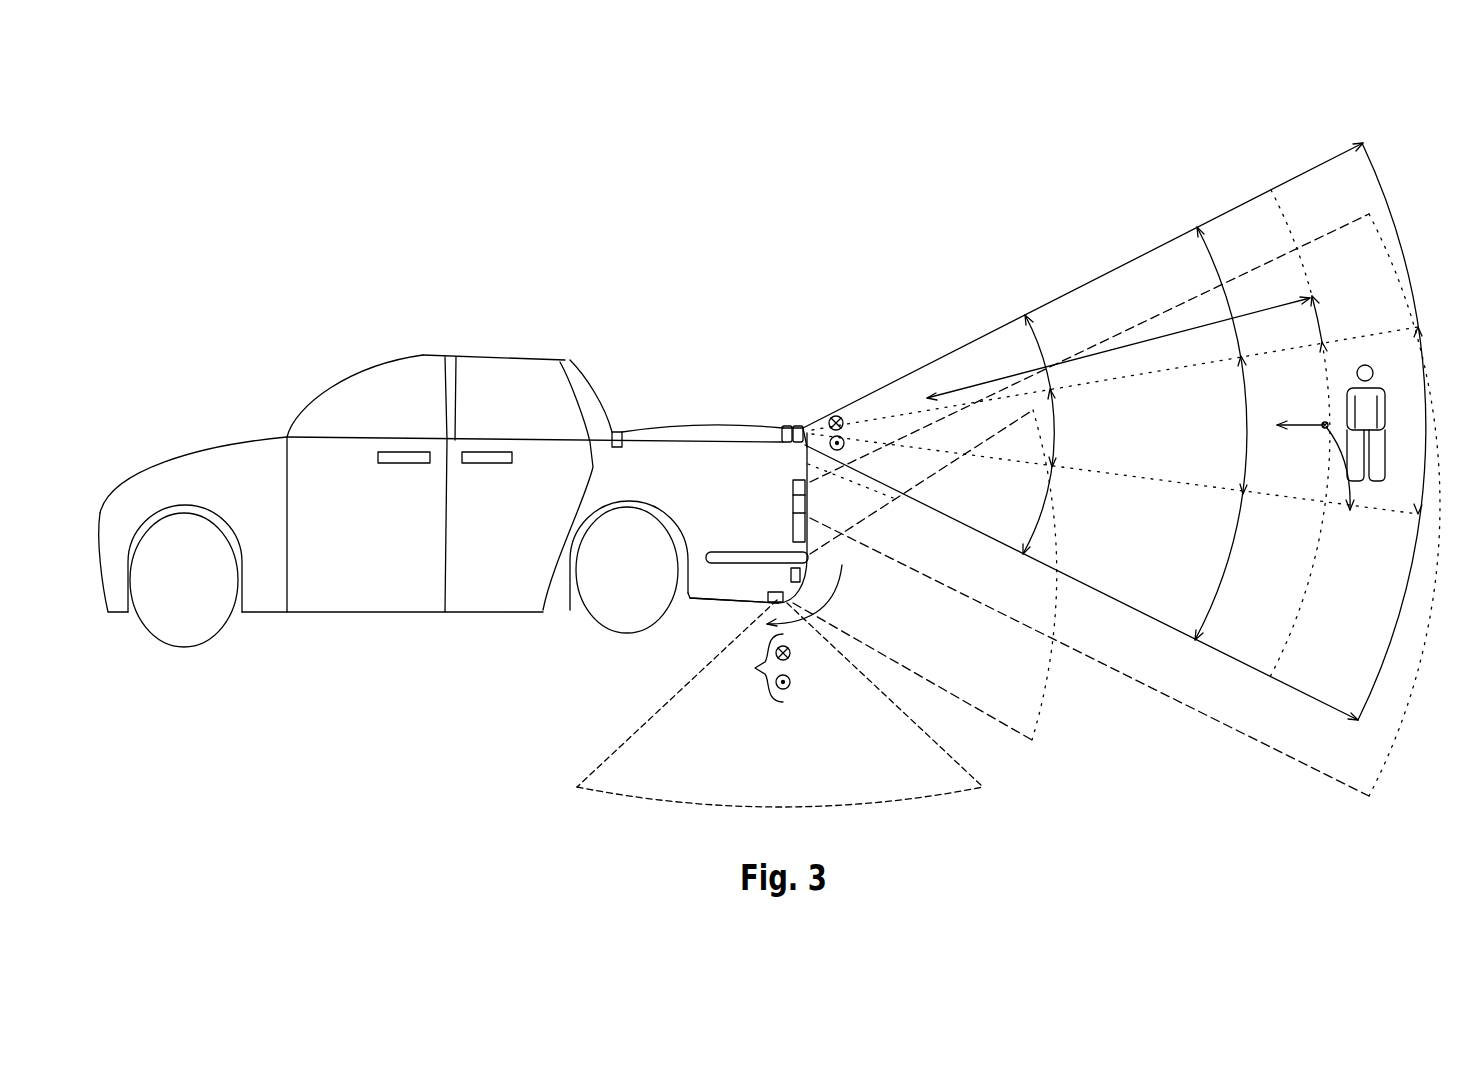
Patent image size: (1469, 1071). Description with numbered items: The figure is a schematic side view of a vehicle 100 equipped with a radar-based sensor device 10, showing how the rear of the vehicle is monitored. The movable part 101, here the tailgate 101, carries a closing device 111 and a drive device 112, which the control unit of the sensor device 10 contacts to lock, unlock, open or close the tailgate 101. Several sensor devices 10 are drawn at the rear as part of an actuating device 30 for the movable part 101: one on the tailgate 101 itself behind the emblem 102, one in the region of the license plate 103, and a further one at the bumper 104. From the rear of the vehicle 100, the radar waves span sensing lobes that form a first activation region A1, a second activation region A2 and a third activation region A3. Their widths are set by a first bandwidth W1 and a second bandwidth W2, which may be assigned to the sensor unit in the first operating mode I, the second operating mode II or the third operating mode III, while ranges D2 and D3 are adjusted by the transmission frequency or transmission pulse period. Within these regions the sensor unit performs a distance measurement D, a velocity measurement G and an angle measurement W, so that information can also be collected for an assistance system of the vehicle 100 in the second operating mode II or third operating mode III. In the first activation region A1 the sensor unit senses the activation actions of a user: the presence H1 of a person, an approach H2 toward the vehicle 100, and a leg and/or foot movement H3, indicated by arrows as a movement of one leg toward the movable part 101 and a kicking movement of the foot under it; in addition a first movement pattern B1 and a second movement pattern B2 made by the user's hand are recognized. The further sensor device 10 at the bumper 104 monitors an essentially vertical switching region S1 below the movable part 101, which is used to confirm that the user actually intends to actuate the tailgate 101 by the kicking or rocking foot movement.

The vehicle 100 is at (387, 375).
The movable part (tailgate) 101 is at (668, 423).
The emblem 102 is at (795, 425).
The license plate 103 is at (793, 527).
The bumper 104 is at (727, 597).
The closing device 111 is at (787, 427).
The drive device 112 is at (621, 431).
The sensor device 10 is at (799, 425).
The actuating device 30 is at (792, 490).
The first activation region A1 is at (1298, 210).
The second activation region A2 is at (1128, 297).
The third activation region A3 is at (967, 362).
The first movement pattern B1 is at (843, 420).
The second movement pattern B2 is at (843, 447).
The distance measurement D is at (1278, 305).
The range of activation region D2 is at (1092, 622).
The range of activation region D3 is at (1287, 456).
The velocity measurement G is at (1318, 325).
The presence H1 is at (1352, 489).
The approach H2 is at (1300, 425).
The leg and/or foot movement H3 is at (793, 633).
The switching region S1 is at (933, 782).
The angle measurement W is at (1157, 343).
The first bandwidth W1 is at (1237, 588).
The second bandwidth W2 is at (1245, 431).
The first operating mode I is at (1332, 229).
The second operating mode II is at (1190, 293).
The third operating mode III is at (1019, 370).